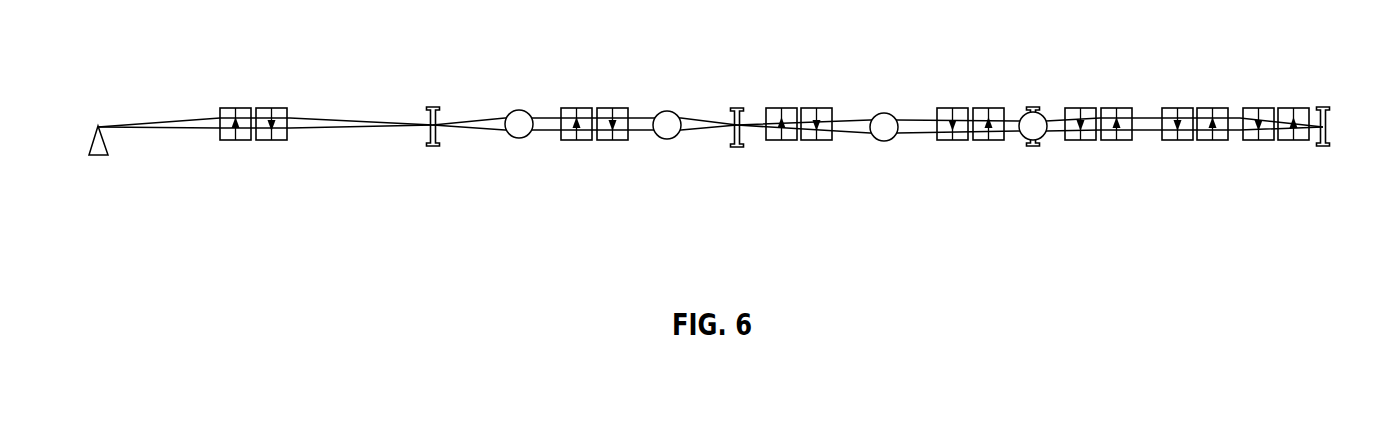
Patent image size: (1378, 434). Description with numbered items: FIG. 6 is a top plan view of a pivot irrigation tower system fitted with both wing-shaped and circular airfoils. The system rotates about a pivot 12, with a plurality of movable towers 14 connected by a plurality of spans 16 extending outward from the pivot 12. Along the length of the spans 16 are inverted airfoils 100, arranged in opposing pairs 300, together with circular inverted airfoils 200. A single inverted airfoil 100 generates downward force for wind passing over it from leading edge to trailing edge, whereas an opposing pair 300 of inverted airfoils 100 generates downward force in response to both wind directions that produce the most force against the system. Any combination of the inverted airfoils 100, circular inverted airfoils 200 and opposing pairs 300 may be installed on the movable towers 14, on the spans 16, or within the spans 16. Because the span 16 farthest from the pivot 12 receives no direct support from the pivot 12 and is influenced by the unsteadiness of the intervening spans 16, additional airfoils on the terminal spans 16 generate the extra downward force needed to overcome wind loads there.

The pivot 12 is at (97, 156).
The movable tower 14 is at (433, 147).
The span 16 is at (160, 127).
The inverted airfoil 100 is at (235, 141).
The circular inverted airfoil 200 is at (519, 138).
The opposing pair of inverted airfoils 300 is at (249, 86).